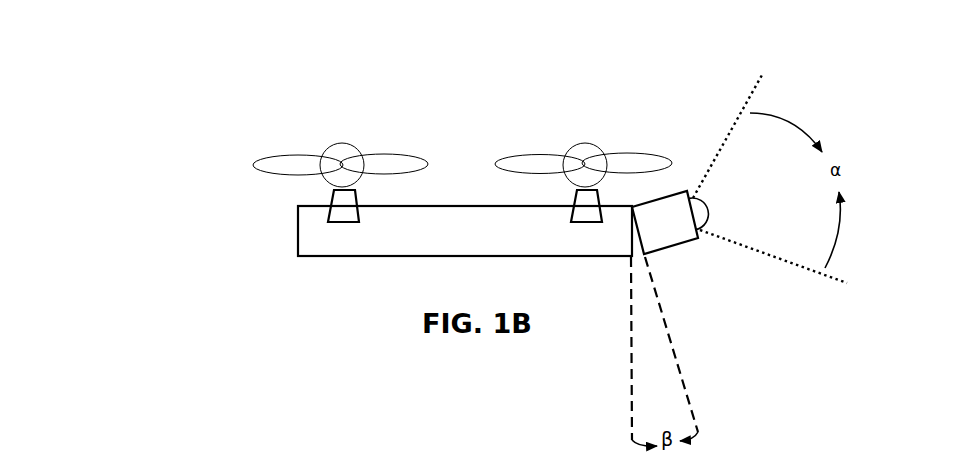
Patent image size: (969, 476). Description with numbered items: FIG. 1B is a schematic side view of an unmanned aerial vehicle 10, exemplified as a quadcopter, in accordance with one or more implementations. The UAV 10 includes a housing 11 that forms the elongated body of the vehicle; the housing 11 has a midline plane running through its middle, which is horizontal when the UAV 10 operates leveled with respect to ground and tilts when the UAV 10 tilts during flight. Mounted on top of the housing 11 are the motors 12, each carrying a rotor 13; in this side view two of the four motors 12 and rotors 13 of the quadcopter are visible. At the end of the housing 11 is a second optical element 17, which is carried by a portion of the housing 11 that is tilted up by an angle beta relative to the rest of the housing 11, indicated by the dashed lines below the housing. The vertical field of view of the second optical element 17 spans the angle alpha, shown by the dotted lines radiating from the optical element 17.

The unmanned aerial vehicle 10 is at (127, 140).
The housing 11 is at (348, 238).
The motor 12 is at (345, 197).
The rotor 13 is at (380, 155).
The second optical element 17 is at (700, 213).